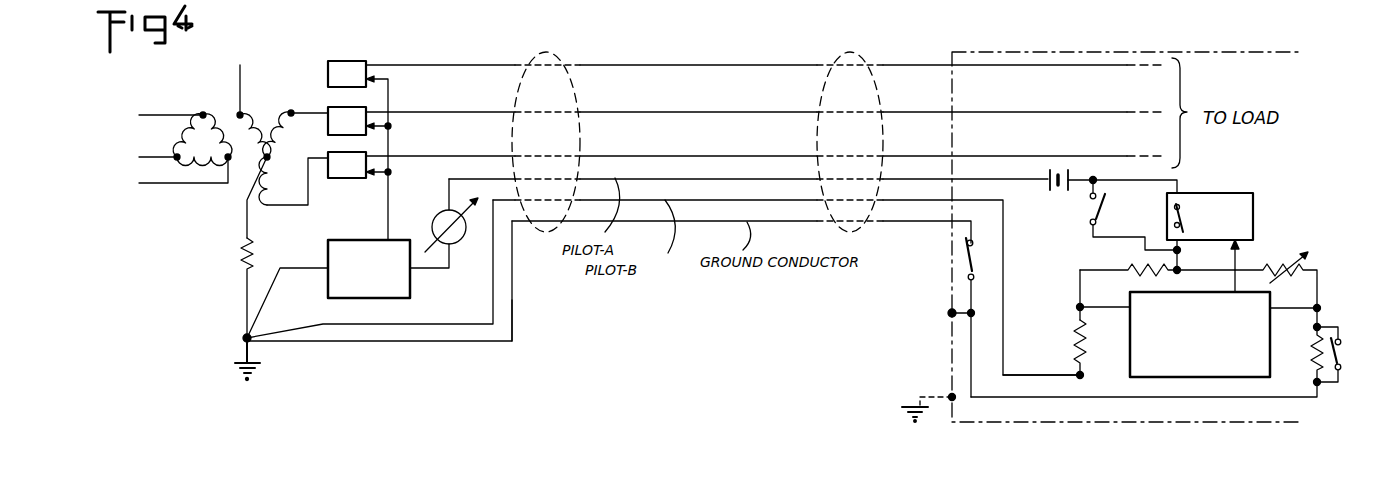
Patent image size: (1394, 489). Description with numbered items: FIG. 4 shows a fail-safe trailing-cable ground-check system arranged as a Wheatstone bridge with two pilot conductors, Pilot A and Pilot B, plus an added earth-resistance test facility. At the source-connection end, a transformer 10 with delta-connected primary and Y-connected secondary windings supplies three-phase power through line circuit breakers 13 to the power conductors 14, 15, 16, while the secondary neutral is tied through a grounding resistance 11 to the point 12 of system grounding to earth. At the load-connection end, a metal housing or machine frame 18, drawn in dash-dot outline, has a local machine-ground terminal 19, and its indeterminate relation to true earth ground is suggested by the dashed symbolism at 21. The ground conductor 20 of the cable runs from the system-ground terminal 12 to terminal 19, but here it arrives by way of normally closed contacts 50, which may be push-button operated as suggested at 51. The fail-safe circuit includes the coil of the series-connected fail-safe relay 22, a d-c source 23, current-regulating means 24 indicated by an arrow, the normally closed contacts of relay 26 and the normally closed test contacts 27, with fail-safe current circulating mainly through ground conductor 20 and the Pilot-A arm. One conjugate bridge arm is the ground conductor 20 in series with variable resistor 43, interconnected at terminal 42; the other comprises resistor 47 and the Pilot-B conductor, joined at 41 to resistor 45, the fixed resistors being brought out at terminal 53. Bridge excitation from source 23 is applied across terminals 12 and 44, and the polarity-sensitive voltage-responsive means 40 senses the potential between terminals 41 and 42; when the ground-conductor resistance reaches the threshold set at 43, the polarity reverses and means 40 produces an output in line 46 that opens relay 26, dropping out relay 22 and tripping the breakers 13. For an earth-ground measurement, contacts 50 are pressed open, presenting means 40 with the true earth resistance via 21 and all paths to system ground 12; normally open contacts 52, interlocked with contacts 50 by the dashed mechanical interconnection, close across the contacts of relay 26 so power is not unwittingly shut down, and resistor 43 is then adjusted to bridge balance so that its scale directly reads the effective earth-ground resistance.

The transformer 10 is at (230, 111).
The grounding resistance 11 is at (247, 258).
The point of system-grounding 12 is at (245, 338).
The line circuit breakers 13 is at (362, 61).
The power conductor 14 is at (468, 42).
The power conductor 15 is at (468, 92).
The power conductor 16 is at (466, 137).
The metal housing or machine frame 18 is at (1015, 422).
The terminal 19 is at (950, 313).
The ground conductor 20 is at (515, 312).
The local-earth ground symbolism 21 is at (920, 397).
The fail-safe relay 22 is at (360, 240).
The d-c source 23 is at (1048, 178).
The current-regulating means 24 is at (466, 238).
The relay 26 is at (1254, 193).
The normally closed test contacts 27 is at (1342, 350).
The polarity-sensitive voltage-responsive means 40 is at (1142, 378).
The bridge terminal 41 is at (1080, 307).
The bridge terminal 42 is at (1319, 307).
The variable resistor 43 is at (1270, 266).
The bridge-excitation terminal 44 is at (1170, 279).
The resistor 45 is at (1128, 262).
The output line 46 is at (1235, 262).
The resistor 47 is at (1075, 342).
The normally closed contacts 50 is at (962, 257).
The push-button 51 is at (977, 258).
The normally open contacts 52 is at (1097, 218).
The terminal 53 is at (1080, 375).